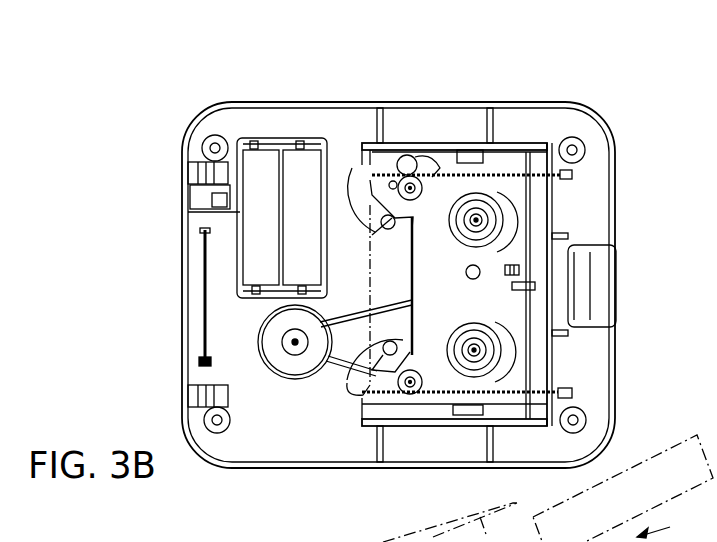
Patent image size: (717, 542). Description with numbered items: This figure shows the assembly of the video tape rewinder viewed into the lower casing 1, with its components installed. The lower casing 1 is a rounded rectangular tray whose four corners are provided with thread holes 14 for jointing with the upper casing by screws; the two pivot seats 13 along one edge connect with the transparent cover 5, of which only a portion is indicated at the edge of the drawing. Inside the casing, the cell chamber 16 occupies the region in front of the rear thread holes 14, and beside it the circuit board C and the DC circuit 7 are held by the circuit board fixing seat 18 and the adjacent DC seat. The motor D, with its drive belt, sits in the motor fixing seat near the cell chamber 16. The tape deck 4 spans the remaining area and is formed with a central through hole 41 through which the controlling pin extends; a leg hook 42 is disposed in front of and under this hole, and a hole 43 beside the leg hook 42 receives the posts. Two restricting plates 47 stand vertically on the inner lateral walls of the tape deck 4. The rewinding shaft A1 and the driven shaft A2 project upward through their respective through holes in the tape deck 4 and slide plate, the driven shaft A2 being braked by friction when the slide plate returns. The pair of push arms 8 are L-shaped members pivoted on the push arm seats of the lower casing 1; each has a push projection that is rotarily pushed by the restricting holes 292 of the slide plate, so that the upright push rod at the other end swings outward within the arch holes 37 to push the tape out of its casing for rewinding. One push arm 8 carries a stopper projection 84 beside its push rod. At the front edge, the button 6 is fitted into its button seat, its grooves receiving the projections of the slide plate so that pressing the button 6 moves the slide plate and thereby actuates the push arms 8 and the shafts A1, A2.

The lower casing 1 is at (613, 177).
The tape deck 4 is at (510, 148).
The transparent cover 5 is at (497, 488).
The button 6 is at (602, 296).
The DC circuit 7 is at (200, 198).
The push arms 8 is at (440, 397).
The pivot seats 13 is at (196, 168).
The thread holes 14 is at (212, 146).
The cell chamber 16 is at (270, 145).
The circuit board fixing seat 18 is at (200, 362).
The arch holes 37 is at (350, 175).
The central through hole 41 is at (468, 270).
The leg hook 42 is at (505, 270).
The hole 43 is at (512, 290).
The restricting plates 47 is at (463, 157).
The stopper projection 84 is at (392, 222).
The restricting holes 292 is at (432, 162).
The rewinding shaft A1 is at (500, 352).
The driven shaft A2 is at (495, 200).
The circuit board C is at (203, 318).
The motor D is at (283, 356).